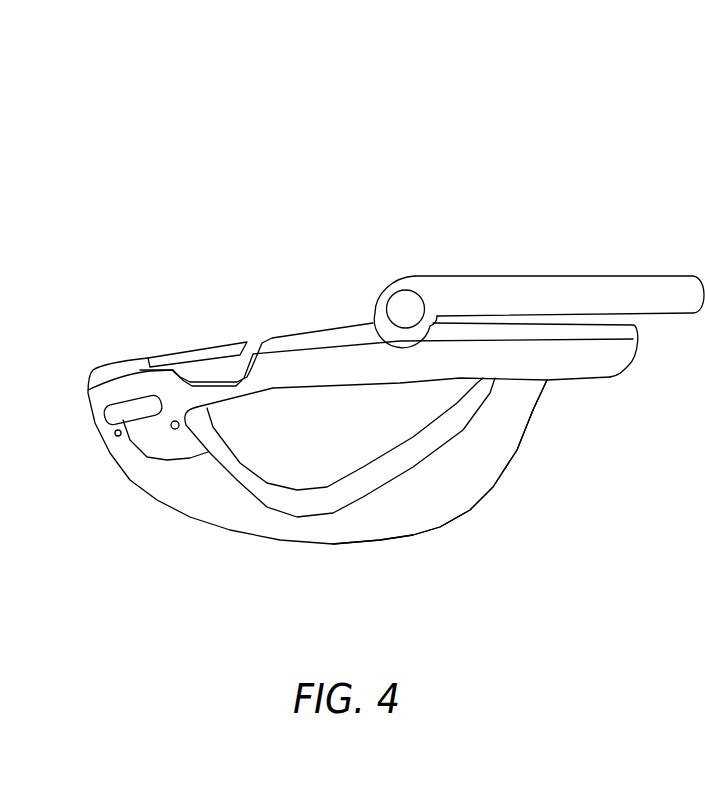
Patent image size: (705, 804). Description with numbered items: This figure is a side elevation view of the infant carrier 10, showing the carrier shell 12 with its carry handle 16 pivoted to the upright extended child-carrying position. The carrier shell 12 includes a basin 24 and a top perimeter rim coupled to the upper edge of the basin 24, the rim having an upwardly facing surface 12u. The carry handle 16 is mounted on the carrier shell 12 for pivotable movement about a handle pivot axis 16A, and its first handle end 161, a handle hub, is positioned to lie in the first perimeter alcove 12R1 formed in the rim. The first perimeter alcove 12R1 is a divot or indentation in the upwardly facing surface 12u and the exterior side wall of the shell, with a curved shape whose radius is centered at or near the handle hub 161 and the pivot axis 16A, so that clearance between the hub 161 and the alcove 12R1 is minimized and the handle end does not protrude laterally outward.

The infant carrier 10 is at (492, 182).
The carrier shell 12 is at (141, 349).
The upwardly facing surface 12u is at (297, 332).
The first perimeter alcove 12R1 is at (287, 121).
The carry handle 16 is at (600, 261).
The handle pivot axis 16A is at (405, 308).
The first handle end 161 is at (415, 271).
The basin 24 is at (514, 499).